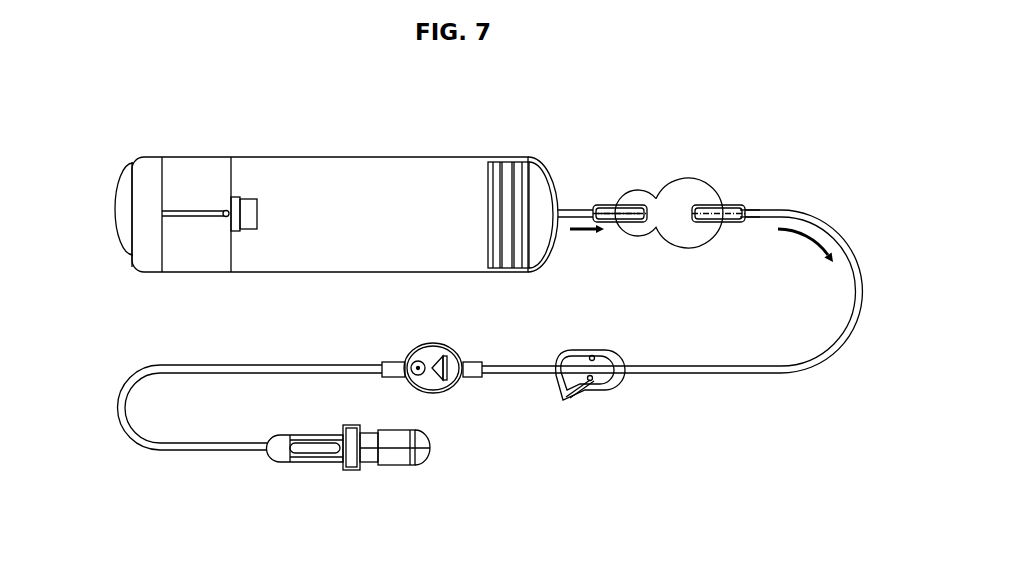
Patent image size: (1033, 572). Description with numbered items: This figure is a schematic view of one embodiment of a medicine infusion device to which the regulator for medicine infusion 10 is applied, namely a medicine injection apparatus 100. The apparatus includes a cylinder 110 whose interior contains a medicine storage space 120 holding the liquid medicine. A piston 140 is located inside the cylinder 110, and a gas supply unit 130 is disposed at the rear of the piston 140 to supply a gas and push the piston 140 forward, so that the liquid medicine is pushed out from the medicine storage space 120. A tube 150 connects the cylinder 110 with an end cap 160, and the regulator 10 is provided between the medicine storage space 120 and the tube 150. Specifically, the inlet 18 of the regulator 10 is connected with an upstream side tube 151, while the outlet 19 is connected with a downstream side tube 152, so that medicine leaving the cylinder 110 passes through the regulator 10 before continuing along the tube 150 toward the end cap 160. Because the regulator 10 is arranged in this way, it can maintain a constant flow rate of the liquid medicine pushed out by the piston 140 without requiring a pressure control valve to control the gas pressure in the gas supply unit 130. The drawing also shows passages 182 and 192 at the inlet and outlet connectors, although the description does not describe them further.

The regulator for medicine infusion 10 is at (696, 166).
The inlet 18 is at (596, 205).
The outlet 19 is at (752, 208).
The medicine injection apparatus 100 is at (85, 205).
The cylinder 110 is at (334, 148).
The medicine storage space 120 is at (541, 183).
The gas supply unit 130 is at (194, 171).
The piston 140 is at (492, 188).
The tube 150 is at (497, 323).
The upstream side tube 151 is at (567, 219).
The downstream side tube 152 is at (828, 226).
The end cap 160 is at (322, 486).
The inlet passage 182 is at (613, 217).
The outlet passage 192 is at (728, 207).